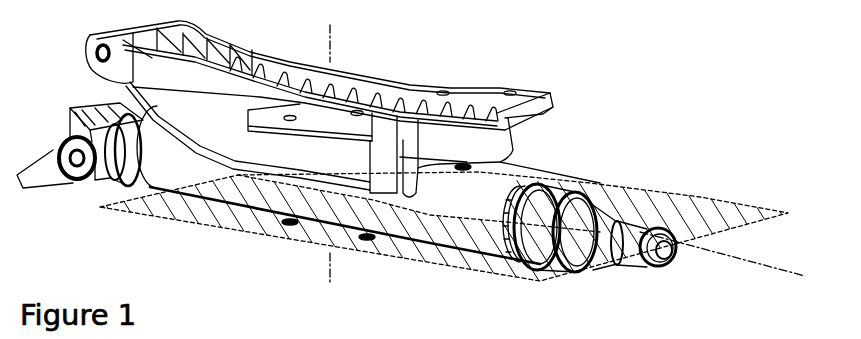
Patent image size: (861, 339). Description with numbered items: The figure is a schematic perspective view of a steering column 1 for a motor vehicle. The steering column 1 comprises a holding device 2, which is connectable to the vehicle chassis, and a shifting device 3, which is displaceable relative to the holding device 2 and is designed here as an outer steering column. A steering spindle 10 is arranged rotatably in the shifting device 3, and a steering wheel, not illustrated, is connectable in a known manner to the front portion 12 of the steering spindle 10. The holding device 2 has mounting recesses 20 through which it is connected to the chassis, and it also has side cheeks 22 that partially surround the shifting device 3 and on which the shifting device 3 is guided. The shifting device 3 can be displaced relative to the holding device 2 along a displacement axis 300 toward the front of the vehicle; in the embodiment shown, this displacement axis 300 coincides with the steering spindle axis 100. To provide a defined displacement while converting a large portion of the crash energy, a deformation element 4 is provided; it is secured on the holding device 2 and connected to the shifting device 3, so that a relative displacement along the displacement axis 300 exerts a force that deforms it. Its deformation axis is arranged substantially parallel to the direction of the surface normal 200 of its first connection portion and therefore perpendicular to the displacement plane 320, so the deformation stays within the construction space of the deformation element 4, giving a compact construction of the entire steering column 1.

The steering column 1 is at (564, 68).
The holding device 2 is at (473, 93).
The shifting device 3 is at (490, 197).
The deformation element 4 is at (348, 93).
The steering spindle 10 is at (602, 202).
The front portion 12 is at (638, 226).
The mounting recesses 20 is at (514, 90).
The side cheeks 22 is at (408, 178).
The steering spindle axis 100 is at (718, 258).
The surface normal 200 is at (332, 60).
The displacement axis 300 is at (758, 267).
The displacement plane 320 is at (196, 170).